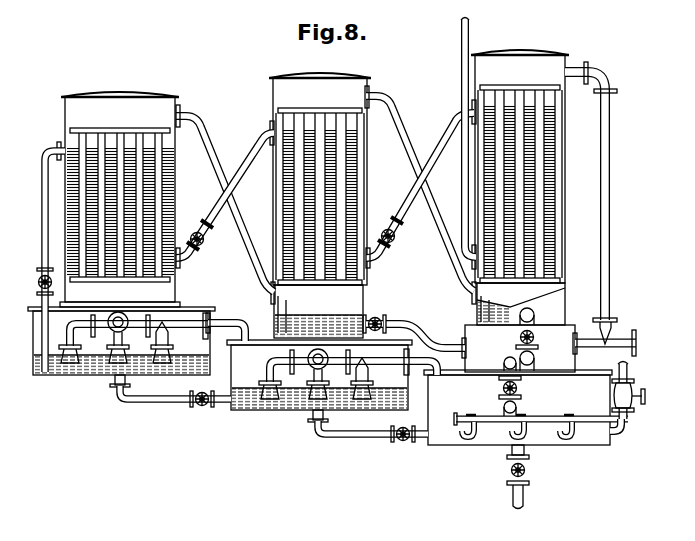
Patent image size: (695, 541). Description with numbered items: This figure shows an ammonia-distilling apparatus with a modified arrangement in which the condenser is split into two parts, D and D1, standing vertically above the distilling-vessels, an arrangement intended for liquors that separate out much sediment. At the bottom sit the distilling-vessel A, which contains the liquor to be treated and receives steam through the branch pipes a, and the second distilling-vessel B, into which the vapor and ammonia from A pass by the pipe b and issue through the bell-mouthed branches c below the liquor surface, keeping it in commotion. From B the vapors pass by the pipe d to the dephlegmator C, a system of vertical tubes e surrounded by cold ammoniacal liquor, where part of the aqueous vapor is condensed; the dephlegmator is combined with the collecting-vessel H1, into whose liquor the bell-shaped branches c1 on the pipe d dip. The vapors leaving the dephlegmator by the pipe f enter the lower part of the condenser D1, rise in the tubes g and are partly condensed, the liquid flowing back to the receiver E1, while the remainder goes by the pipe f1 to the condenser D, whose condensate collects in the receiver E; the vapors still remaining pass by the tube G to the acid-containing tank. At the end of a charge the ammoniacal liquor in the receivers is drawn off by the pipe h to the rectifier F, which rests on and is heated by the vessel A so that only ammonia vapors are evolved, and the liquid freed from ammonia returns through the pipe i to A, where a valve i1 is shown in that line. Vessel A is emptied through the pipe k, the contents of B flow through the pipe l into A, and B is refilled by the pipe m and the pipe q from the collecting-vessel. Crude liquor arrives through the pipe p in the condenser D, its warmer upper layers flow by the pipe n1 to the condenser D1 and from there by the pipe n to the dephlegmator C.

The distilling-vessel A is at (518, 407).
The second distilling-vessel B is at (319, 375).
The dephlegmator C is at (118, 199).
The condenser D is at (520, 177).
The condenser D1 is at (320, 188).
The receiver E is at (521, 304).
The receiver E1 is at (318, 311).
The rectifier F is at (550, 348).
The tube G is at (596, 203).
The collecting-vessel H1 is at (121, 341).
The branch pipes a is at (541, 426).
The pipe b is at (405, 368).
The bell-mouthed branches c is at (334, 374).
The bell-shaped branches c1 is at (134, 337).
The pipe d is at (210, 323).
The vertical tubes e is at (120, 205).
The pipe f is at (249, 286).
The pipe f1 is at (448, 286).
The condenser-tubes g is at (419, 185).
The pipe h is at (539, 357).
The pipe i is at (504, 363).
The valve i1 is at (518, 403).
The pipe k is at (522, 477).
The pipe l is at (368, 434).
The pipe m is at (43, 261).
The pipe n is at (183, 261).
The pipe n1 is at (378, 260).
The pipe p is at (462, 227).
The pipe q is at (170, 400).